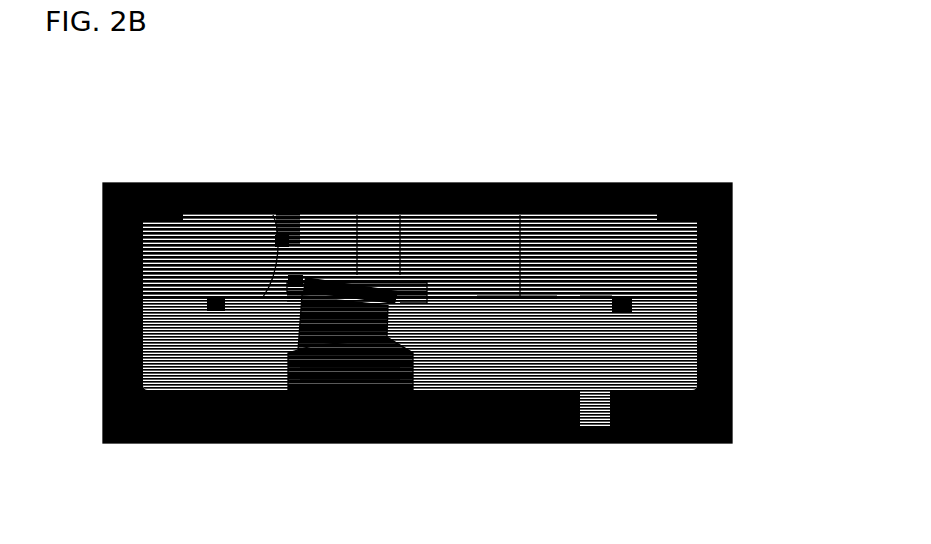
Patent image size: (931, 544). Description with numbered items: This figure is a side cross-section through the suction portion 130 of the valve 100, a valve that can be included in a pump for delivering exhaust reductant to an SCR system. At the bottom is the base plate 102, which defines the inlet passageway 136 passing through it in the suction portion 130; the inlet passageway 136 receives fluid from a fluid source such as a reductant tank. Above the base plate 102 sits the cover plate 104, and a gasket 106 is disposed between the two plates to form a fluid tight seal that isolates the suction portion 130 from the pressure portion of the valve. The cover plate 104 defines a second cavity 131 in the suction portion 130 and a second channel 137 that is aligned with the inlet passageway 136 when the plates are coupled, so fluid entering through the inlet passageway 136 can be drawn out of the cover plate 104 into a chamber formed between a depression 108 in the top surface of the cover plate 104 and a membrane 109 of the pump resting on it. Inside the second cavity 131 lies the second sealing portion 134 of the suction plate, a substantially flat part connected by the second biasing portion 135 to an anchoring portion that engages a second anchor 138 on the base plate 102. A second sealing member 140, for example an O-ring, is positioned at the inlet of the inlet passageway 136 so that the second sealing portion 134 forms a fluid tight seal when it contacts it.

The valve 100 is at (720, 110).
The suction portion 130 is at (692, 182).
The base plate 102 is at (165, 365).
The cover plate 104 is at (165, 265).
The gasket 106 is at (630, 307).
The depression 108 is at (380, 217).
The membrane 109 is at (410, 215).
The second cavity 131 is at (278, 247).
The second sealing portion 134 is at (318, 275).
The second biasing portion 135 is at (448, 295).
The inlet passageway 136 is at (332, 375).
The second channel 137 is at (287, 215).
The second anchor 138 is at (573, 282).
The second sealing member 140 is at (382, 293).